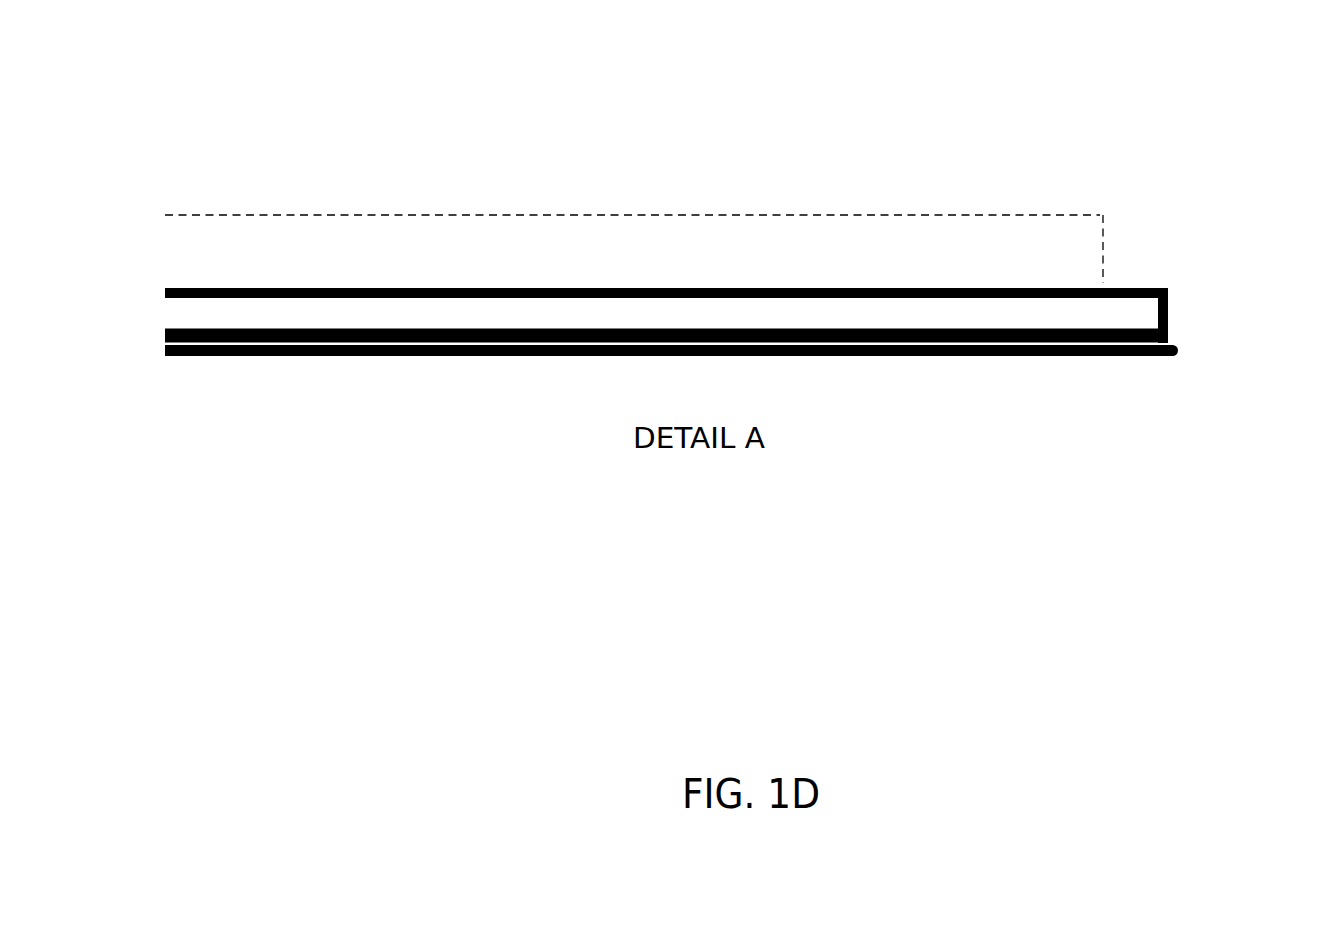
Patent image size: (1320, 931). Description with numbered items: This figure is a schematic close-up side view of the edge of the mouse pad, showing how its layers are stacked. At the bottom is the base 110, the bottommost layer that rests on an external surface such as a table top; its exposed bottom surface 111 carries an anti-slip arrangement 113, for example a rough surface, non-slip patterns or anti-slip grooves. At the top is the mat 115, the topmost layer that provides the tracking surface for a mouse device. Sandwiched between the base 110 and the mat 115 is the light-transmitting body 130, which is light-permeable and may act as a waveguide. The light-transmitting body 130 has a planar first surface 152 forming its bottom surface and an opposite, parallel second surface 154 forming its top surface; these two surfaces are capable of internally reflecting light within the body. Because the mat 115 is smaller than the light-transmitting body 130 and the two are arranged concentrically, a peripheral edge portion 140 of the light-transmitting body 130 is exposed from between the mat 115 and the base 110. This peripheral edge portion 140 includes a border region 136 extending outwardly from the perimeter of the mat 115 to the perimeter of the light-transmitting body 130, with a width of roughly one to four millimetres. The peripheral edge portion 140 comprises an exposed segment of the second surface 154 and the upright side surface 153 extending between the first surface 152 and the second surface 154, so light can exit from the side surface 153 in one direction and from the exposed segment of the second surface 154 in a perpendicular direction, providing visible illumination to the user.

The base 110 is at (671, 433).
The exposed surface of the base 111 is at (671, 433).
The anti-slip arrangement 113 is at (290, 375).
The mat 115 is at (643, 240).
The light-transmitting body 130 is at (735, 258).
The border region 136 is at (1140, 199).
The peripheral edge portion 140 is at (1127, 270).
The first surface 152 is at (940, 328).
The side surface 153 is at (1168, 312).
The second surface 154 is at (1002, 297).